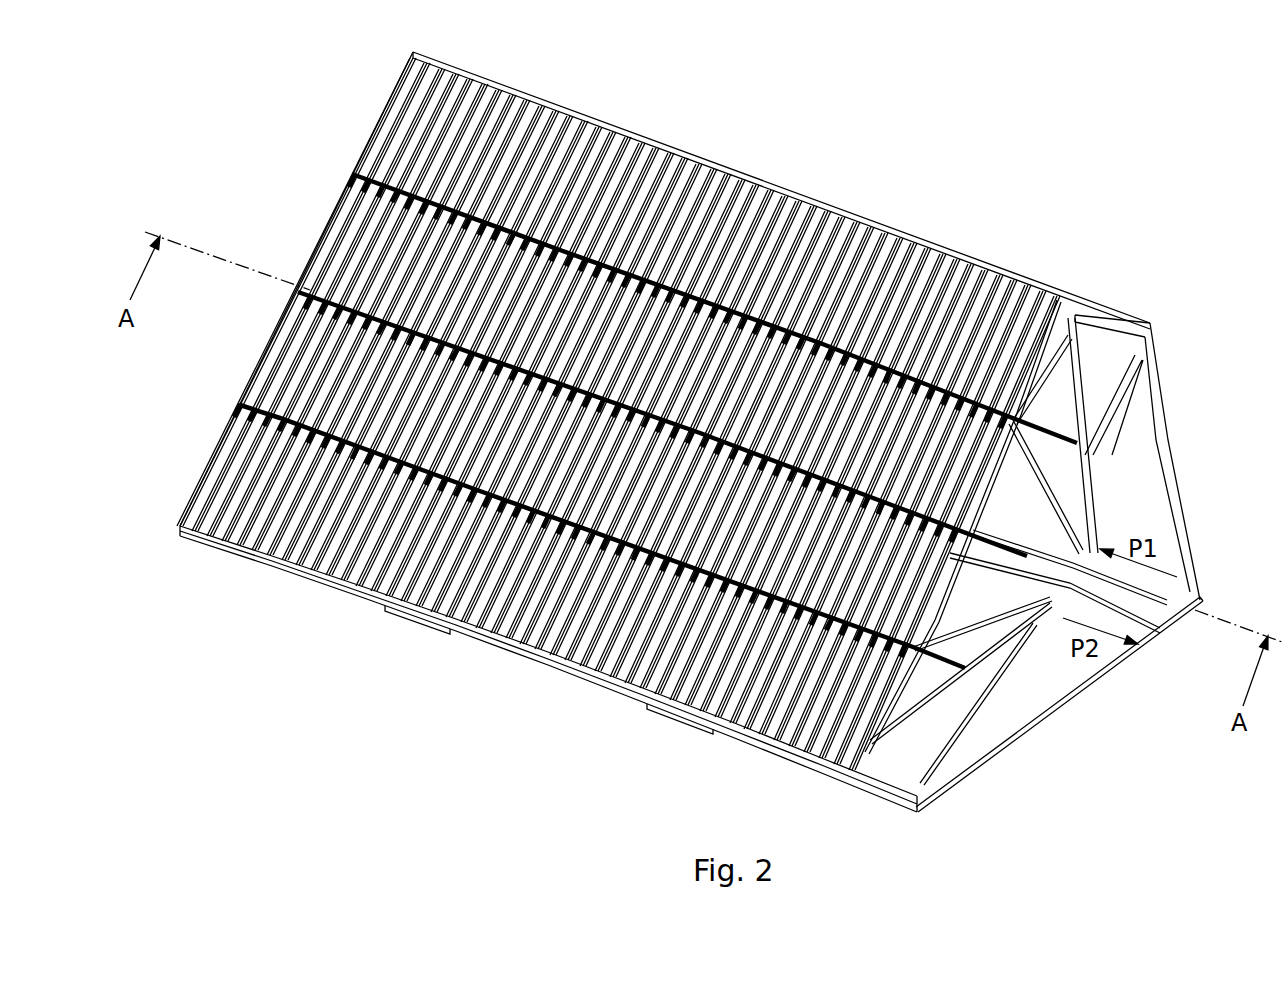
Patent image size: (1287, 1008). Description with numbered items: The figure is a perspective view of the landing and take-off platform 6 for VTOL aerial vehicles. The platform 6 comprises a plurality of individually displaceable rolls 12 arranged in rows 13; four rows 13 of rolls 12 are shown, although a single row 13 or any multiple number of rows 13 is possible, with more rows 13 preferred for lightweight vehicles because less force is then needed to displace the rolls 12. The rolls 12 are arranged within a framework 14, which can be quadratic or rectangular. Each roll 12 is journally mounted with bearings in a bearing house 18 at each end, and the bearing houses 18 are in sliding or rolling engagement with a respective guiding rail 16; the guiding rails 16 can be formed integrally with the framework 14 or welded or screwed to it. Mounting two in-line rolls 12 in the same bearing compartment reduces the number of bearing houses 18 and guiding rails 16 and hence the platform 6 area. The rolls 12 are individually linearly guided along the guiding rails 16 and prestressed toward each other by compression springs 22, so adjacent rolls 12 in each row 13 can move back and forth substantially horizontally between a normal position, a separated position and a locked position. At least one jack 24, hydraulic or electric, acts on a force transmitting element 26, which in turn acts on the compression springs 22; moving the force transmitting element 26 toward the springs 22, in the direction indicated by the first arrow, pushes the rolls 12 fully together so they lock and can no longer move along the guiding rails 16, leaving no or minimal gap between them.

The landing and take-off platform 6 is at (810, 162).
The rolls 12 is at (800, 737).
The rows 13 is at (200, 462).
The framework 14 is at (718, 737).
The guiding rail 16 is at (1058, 303).
The bearing house 18 is at (905, 368).
The compression springs 22 is at (1012, 412).
The jack 24 is at (1153, 605).
The force transmitting element 26 is at (1075, 312).